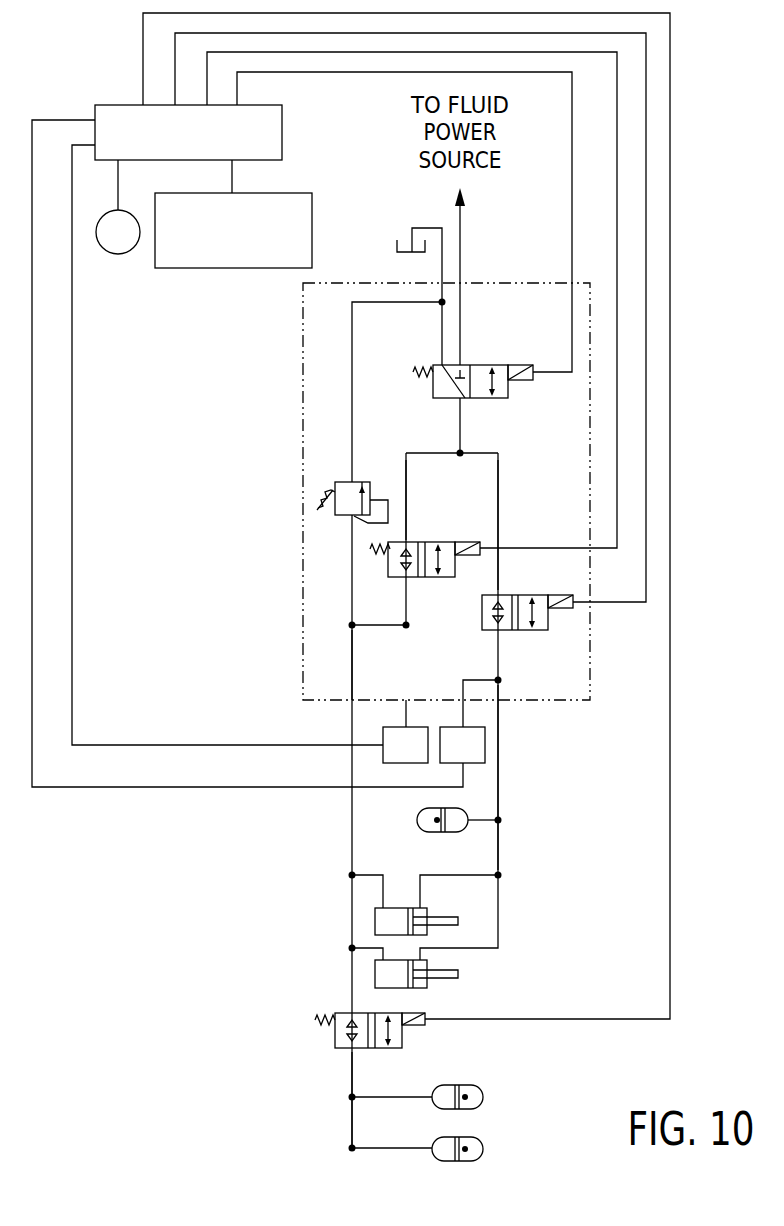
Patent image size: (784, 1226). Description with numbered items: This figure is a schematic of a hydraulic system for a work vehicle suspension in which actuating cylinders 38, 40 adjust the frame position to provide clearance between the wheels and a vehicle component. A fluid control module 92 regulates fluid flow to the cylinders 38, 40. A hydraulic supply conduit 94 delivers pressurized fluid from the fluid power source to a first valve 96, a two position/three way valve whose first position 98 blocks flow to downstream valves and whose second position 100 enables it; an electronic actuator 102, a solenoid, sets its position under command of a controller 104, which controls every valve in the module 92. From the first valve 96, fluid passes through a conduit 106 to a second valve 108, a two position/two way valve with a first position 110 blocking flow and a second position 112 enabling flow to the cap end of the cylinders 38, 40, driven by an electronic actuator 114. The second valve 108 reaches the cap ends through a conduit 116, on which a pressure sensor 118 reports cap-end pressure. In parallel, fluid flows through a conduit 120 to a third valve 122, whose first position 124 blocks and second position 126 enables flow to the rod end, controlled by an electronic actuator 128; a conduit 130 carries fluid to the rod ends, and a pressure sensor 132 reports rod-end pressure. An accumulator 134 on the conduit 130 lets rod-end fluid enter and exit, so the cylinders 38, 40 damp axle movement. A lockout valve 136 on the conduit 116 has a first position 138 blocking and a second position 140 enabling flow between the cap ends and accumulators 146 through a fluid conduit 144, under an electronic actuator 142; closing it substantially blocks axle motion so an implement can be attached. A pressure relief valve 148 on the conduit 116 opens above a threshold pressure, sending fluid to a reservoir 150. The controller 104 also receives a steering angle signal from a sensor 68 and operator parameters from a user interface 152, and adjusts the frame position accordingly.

The actuating cylinder 38 is at (374, 924).
The actuating cylinder 40 is at (374, 977).
The sensor 68 is at (118, 254).
The fluid control module 92 is at (303, 350).
The hydraulic supply conduit 94 is at (460, 237).
The first valve 96 is at (490, 348).
The first position 98 is at (430, 388).
The second position 100 is at (508, 393).
The electronic actuator 102 is at (525, 360).
The controller 104 is at (282, 131).
The conduit 106 is at (406, 497).
The second valve 108 is at (438, 588).
The first position 110 is at (390, 568).
The second position 112 is at (455, 566).
The electronic actuator 114 is at (467, 537).
The conduit 116 is at (352, 662).
The pressure sensor 118 is at (383, 735).
The conduit 120 is at (498, 483).
The third valve 122 is at (540, 650).
The first position 124 is at (478, 622).
The second position 126 is at (552, 620).
The electronic actuator 128 is at (553, 595).
The conduit 130 is at (498, 779).
The pressure sensor 132 is at (485, 745).
The accumulator 134 is at (436, 834).
The lockout valve 136 is at (374, 1062).
The first position 138 is at (343, 1010).
The second position 140 is at (395, 1048).
The electronic actuator 142 is at (408, 1008).
The fluid conduit 144 is at (352, 1122).
The accumulators 146 is at (478, 1138).
The pressure relief valve 148 is at (343, 478).
The reservoir 150 is at (400, 254).
The user interface 152 is at (232, 268).